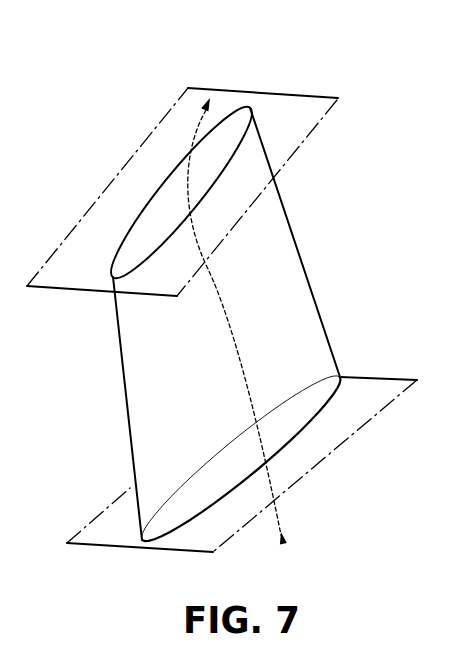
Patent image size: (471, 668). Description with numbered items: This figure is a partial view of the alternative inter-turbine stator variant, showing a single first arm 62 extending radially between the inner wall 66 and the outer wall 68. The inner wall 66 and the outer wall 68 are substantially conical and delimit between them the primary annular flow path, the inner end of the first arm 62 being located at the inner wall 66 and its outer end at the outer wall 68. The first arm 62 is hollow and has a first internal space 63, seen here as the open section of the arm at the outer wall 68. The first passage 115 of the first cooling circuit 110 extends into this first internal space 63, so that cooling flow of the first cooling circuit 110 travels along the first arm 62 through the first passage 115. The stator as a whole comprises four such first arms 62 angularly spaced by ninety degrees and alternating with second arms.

The first arm 62 is at (342, 283).
The first internal space 63 is at (162, 232).
The inner wall 66 is at (112, 530).
The outer wall 68 is at (305, 108).
The first cooling circuit 110 is at (278, 510).
The first passage 115 is at (233, 358).